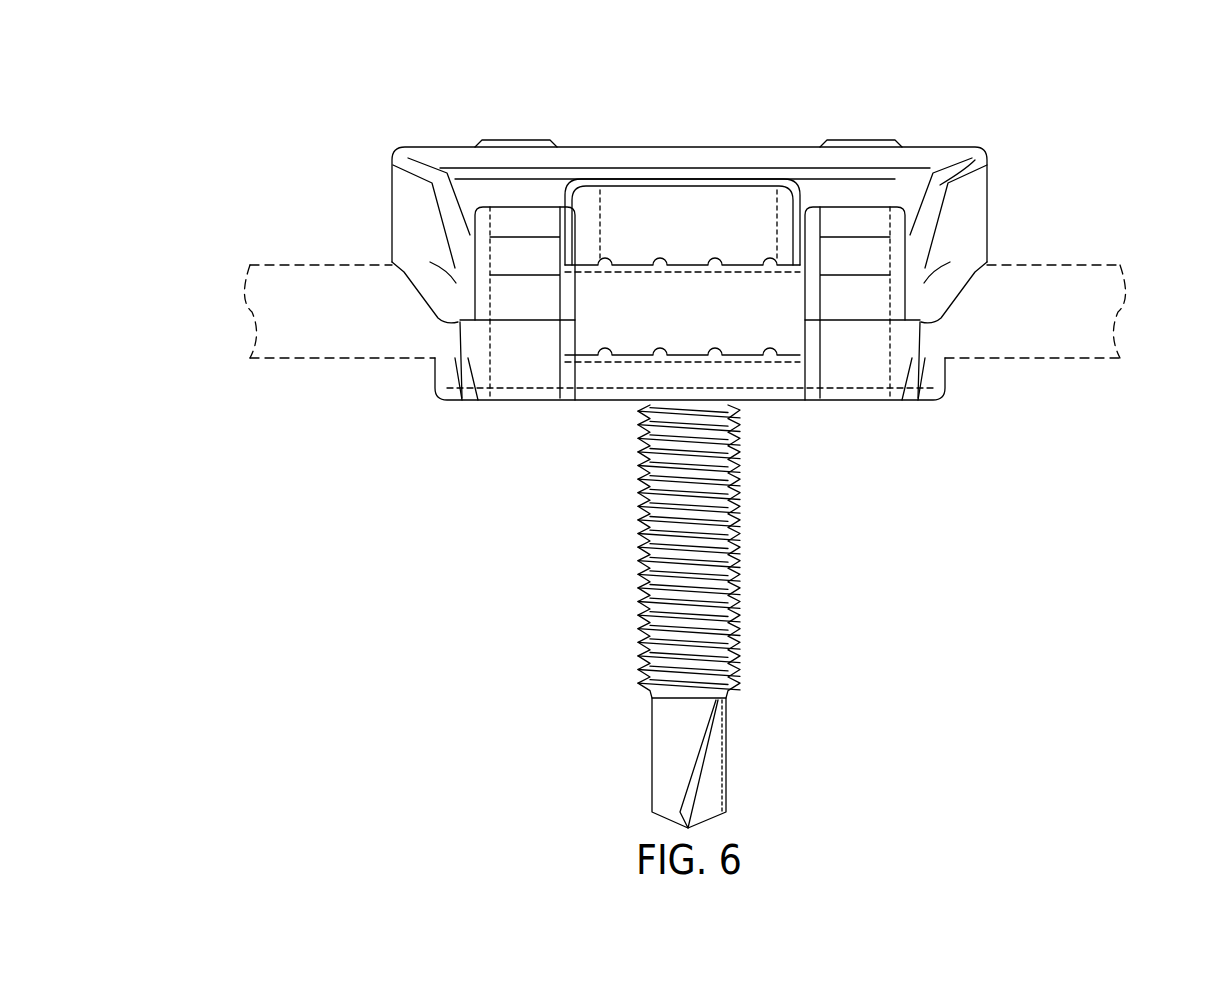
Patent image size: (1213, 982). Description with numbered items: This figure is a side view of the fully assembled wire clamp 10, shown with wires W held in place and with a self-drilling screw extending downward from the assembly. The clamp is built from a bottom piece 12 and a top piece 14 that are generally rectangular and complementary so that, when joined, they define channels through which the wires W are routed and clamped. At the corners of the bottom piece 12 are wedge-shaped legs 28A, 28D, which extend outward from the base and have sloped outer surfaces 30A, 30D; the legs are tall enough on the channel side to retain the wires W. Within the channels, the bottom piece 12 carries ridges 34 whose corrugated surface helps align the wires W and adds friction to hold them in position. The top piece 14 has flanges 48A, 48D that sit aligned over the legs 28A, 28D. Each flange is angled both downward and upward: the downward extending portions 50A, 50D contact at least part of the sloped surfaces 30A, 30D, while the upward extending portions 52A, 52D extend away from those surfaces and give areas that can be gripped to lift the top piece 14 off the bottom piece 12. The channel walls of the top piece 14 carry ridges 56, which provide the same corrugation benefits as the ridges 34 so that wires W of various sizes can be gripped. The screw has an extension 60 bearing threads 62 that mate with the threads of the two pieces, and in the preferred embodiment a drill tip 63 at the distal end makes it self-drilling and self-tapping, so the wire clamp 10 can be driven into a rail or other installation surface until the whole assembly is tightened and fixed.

The wire clamp 10 is at (225, 114).
The bottom piece 12 is at (612, 383).
The top piece 14 is at (784, 162).
The leg 28A is at (465, 380).
The leg 28D is at (872, 380).
The sloped outer surface 30A is at (532, 380).
The sloped outer surface 30D is at (835, 380).
The ridges 34 is at (716, 355).
The flange 48A is at (510, 213).
The flange 48D is at (864, 240).
The downward extending portion 50A is at (440, 265).
The downward extending portion 50D is at (940, 262).
The upward extending portion 52A is at (470, 262).
The upward extending portion 52D is at (935, 262).
The ridges 56 is at (661, 268).
The extension 60 is at (730, 675).
The threads 62 is at (740, 633).
The drill tip 63 is at (712, 798).
The wires W is at (1112, 318).